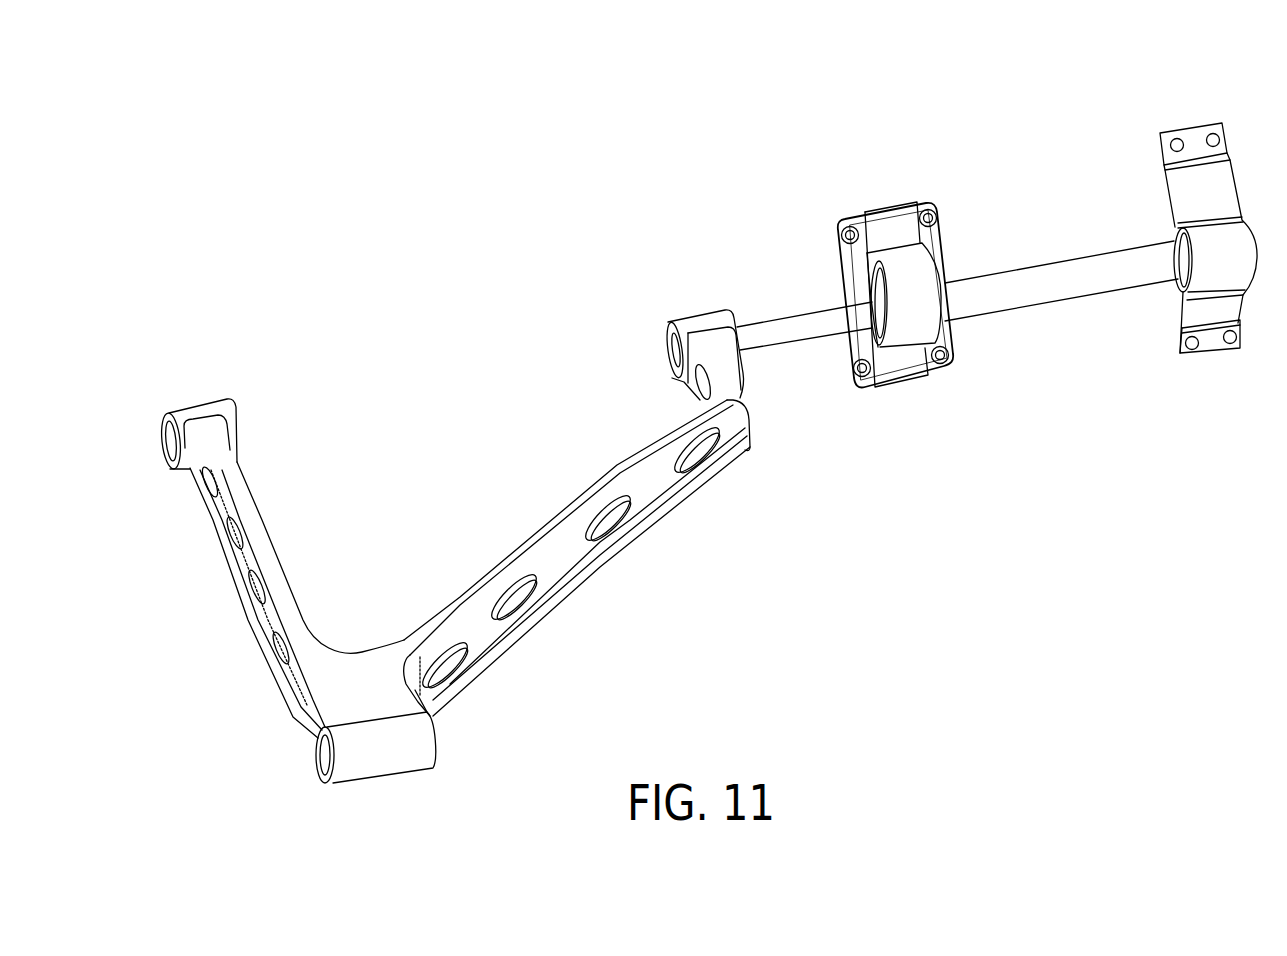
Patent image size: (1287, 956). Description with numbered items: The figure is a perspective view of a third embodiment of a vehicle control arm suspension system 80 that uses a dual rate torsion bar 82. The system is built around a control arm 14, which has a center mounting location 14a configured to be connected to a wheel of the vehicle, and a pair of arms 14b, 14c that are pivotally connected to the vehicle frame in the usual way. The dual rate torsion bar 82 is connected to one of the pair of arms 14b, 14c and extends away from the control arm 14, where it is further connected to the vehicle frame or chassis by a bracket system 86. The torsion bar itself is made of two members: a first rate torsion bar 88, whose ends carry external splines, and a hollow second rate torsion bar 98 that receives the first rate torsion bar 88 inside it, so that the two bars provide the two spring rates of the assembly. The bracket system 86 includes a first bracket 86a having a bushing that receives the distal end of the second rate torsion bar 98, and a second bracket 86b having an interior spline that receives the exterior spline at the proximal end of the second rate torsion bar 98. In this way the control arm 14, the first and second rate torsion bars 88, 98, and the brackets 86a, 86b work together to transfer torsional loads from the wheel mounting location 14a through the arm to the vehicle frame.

The control arm 14 is at (575, 603).
The center mounting location 14a is at (415, 745).
The arm 14b is at (706, 322).
The arm 14c is at (207, 414).
The vehicle control arm suspension system 80 is at (631, 135).
The dual rate torsion bar 82 is at (1035, 215).
The bracket system 86 is at (1226, 96).
The first bracket 86a is at (1183, 187).
The second bracket 86b is at (893, 220).
The first rate torsion bar 88 is at (770, 340).
The second rate torsion bar 98 is at (1055, 296).